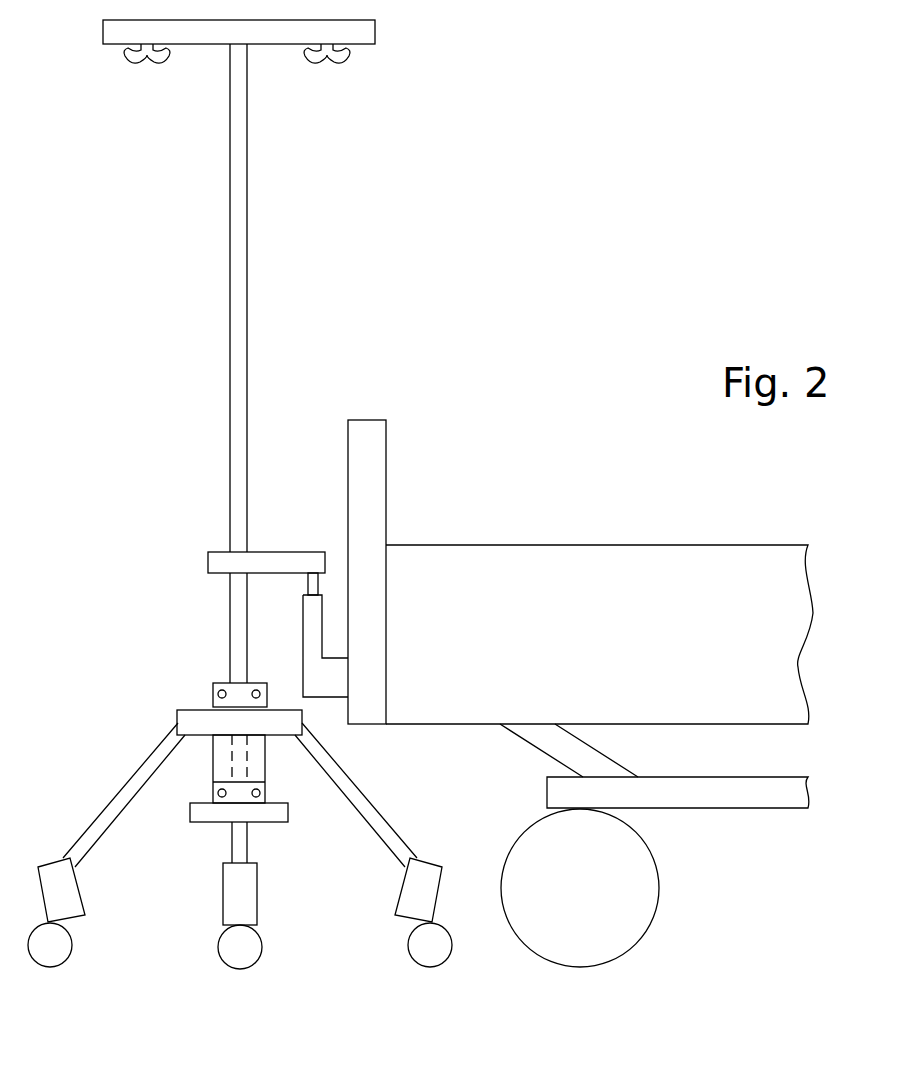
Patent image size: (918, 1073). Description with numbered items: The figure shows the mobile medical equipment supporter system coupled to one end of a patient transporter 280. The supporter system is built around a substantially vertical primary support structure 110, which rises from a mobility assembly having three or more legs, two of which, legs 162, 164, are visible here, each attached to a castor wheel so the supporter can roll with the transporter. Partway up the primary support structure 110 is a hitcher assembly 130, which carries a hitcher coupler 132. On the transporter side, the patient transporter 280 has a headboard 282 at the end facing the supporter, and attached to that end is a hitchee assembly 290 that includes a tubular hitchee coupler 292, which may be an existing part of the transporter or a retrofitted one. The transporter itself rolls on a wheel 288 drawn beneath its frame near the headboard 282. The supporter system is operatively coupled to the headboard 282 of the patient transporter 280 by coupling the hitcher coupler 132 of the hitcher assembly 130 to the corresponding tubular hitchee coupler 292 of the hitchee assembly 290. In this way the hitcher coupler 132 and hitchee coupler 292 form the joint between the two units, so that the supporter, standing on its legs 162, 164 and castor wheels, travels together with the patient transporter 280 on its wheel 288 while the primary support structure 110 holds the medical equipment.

The primary support structure 110 is at (230, 360).
The hitcher assembly 130 is at (219, 575).
The hitcher coupler 132 is at (318, 583).
The leg 162 is at (360, 817).
The leg 164 is at (137, 773).
The patient transporter 280 is at (643, 545).
The headboard 282 is at (386, 448).
The wheel 288 is at (662, 883).
The hitchee assembly 290 is at (318, 697).
The hitchee coupler 292 is at (303, 680).